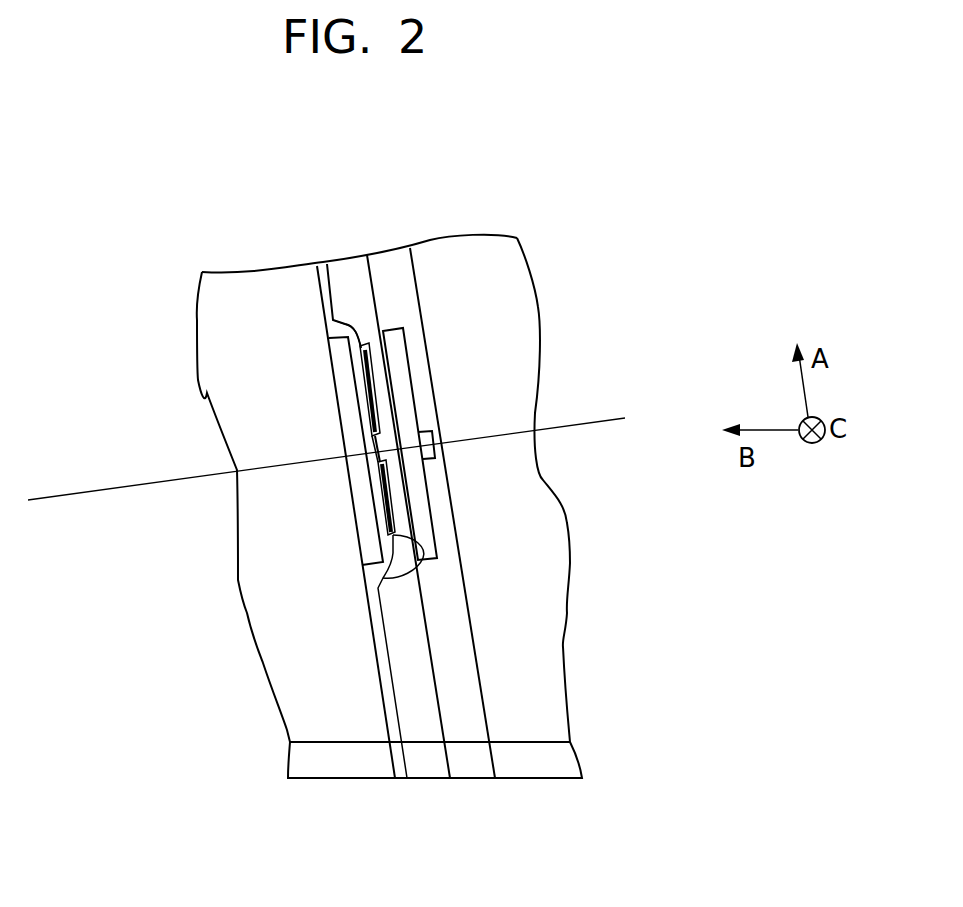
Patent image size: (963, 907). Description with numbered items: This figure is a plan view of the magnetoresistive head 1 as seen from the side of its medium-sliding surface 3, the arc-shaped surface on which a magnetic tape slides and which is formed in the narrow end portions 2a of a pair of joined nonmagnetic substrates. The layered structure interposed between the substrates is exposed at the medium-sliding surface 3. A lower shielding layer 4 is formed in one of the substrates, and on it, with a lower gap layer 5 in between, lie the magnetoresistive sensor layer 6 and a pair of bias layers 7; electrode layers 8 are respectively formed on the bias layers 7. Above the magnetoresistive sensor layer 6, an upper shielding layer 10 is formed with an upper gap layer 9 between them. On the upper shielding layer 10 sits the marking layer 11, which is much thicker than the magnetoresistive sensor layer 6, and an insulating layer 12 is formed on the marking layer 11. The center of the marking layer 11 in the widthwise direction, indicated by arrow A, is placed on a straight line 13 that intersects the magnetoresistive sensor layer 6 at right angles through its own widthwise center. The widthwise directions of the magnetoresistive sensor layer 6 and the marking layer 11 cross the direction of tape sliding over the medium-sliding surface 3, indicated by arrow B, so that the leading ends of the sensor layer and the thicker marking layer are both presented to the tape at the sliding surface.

The magnetoresistive head 1 is at (162, 252).
The narrow end portions 2a is at (340, 743).
The medium-sliding surface 3 is at (538, 612).
The lower shielding layer 4 is at (330, 387).
The lower gap layer 5 is at (323, 262).
The magnetoresistive sensor layer 6 is at (380, 437).
The bias layers 7 is at (362, 348).
The electrode layers 8 is at (366, 352).
The upper gap layer 9 is at (348, 270).
The upper shielding layer 10 is at (425, 520).
The marking layer 11 is at (442, 451).
The insulating layer 12 is at (412, 307).
The straight line 13 is at (43, 497).